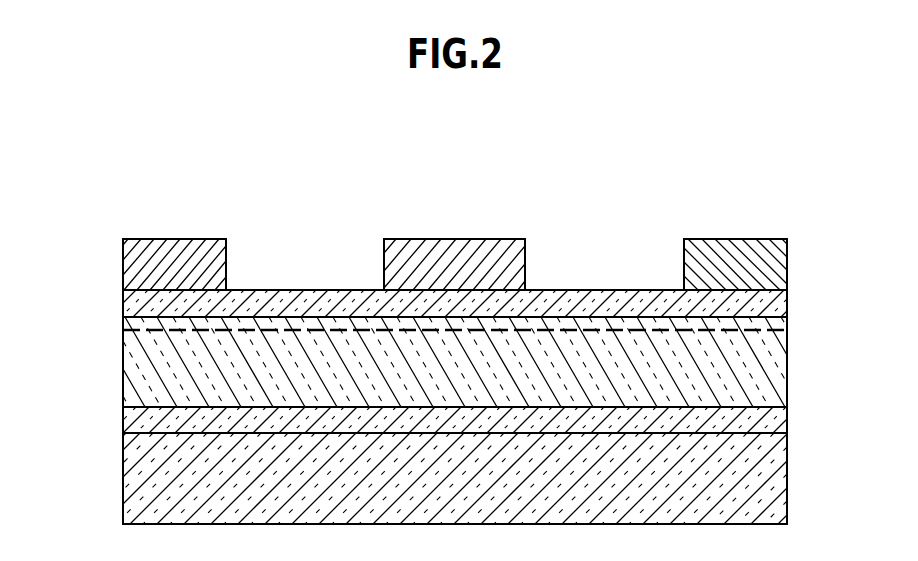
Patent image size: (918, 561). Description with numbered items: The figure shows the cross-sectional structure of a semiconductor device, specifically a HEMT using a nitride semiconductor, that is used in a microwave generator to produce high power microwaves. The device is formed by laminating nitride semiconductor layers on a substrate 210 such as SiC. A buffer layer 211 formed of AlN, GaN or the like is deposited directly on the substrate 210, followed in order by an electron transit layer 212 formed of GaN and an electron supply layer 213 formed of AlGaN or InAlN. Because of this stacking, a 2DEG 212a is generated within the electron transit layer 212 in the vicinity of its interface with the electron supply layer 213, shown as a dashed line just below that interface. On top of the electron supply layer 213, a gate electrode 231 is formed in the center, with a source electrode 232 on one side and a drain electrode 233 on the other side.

The substrate 210 is at (775, 470).
The buffer layer 211 is at (773, 410).
The electron transit layer 212 is at (768, 360).
The 2DEG 212a is at (143, 329).
The electron supply layer 213 is at (777, 302).
The gate electrode 231 is at (455, 253).
The source electrode 232 is at (178, 252).
The drain electrode 233 is at (737, 253).